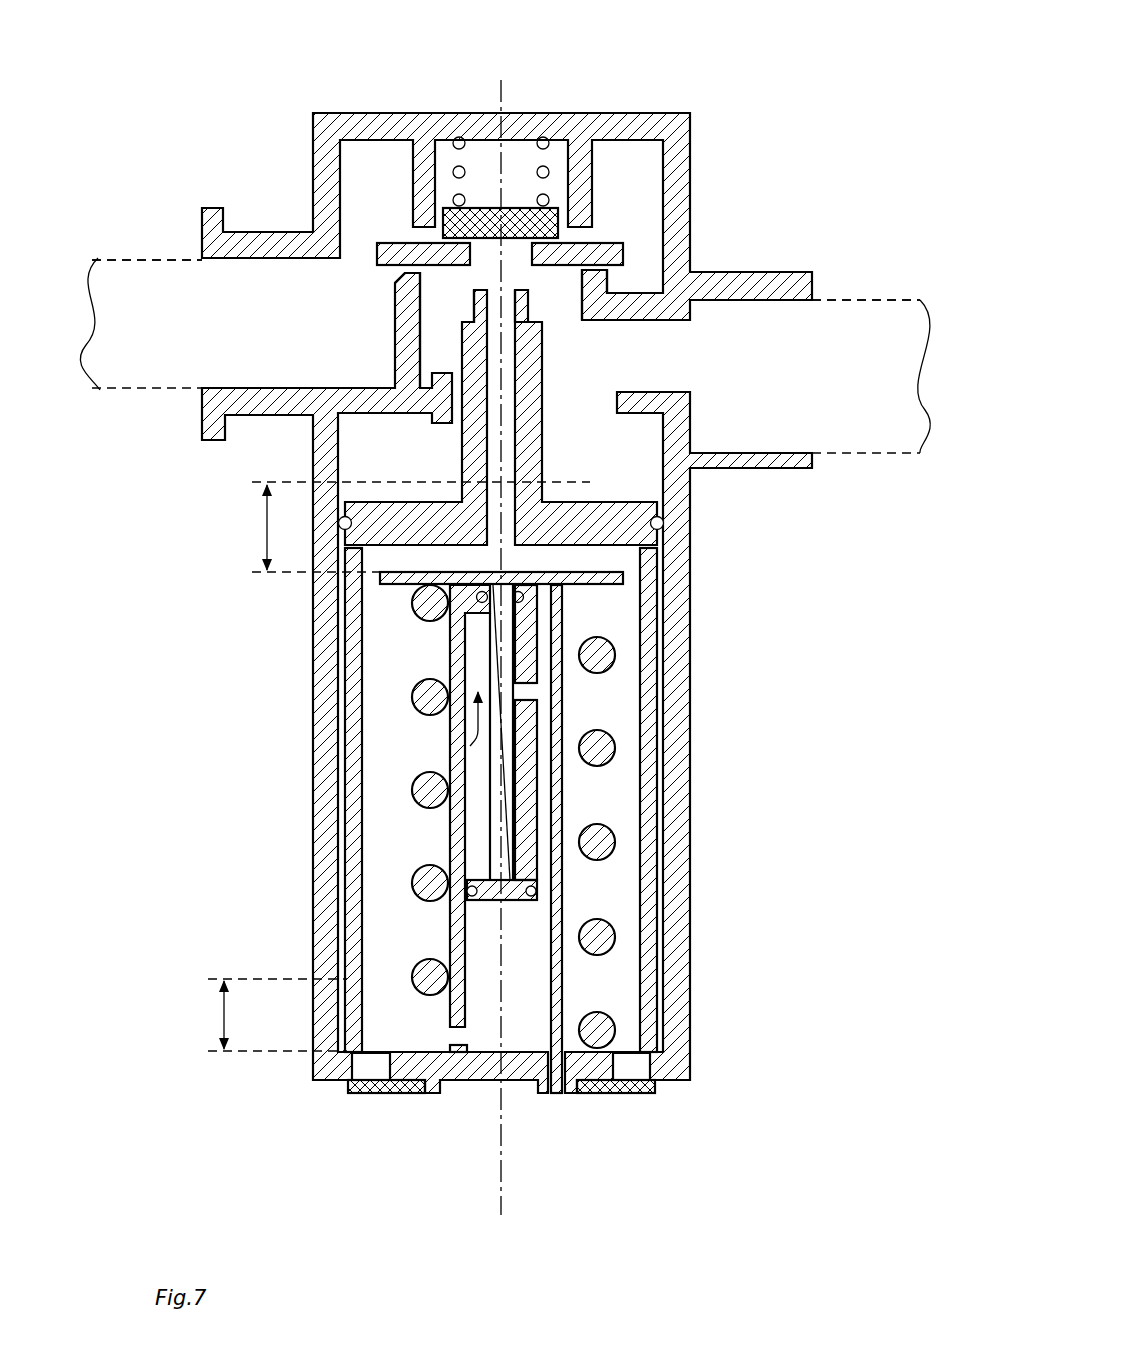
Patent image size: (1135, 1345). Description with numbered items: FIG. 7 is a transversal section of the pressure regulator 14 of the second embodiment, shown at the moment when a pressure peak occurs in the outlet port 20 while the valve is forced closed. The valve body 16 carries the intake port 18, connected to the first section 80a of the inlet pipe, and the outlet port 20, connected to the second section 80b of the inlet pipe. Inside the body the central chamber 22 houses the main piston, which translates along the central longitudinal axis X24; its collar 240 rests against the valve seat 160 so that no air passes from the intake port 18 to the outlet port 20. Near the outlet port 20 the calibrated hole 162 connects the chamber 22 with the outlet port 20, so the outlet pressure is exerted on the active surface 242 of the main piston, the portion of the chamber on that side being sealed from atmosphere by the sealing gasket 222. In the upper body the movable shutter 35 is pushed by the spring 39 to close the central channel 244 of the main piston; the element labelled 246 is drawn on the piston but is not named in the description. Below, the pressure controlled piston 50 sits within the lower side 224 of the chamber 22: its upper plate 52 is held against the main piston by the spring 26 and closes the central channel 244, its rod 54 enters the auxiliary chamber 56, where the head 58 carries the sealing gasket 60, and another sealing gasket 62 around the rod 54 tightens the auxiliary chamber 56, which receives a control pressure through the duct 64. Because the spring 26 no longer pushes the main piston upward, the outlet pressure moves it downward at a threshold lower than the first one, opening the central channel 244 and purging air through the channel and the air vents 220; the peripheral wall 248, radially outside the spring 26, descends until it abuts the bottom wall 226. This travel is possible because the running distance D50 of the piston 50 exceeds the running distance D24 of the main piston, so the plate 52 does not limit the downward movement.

The pressure regulator 14 is at (760, 106).
The valve body 16 is at (310, 192).
The intake port 18 is at (222, 290).
The outlet port 20 is at (797, 430).
The central chamber 22 is at (613, 440).
The spring 26 is at (598, 752).
The movable shutter 35 is at (548, 220).
The spring 39 is at (557, 140).
The pressure controlled piston 50 is at (522, 737).
The upper plate 52 is at (478, 600).
The rod 54 is at (540, 692).
The auxiliary chamber 56 is at (458, 740).
The head 58 is at (517, 900).
The sealing gasket 60 is at (540, 900).
The sealing gasket 62 is at (545, 590).
The duct 64 is at (540, 893).
The first section of the inlet pipe 80a is at (128, 258).
The second section of the inlet pipe 80b is at (847, 300).
The valve seat 160 is at (404, 278).
The calibrated hole 162 is at (610, 397).
The air vents 220 is at (372, 1065).
The sealing gasket 222 is at (340, 523).
The lower side of the chamber 224 is at (612, 1003).
The bottom wall 226 is at (408, 1068).
The collar 240 is at (603, 251).
The active surface 242 is at (487, 456).
The central channel 244 is at (470, 441).
The stem neck 246 is at (462, 339).
The peripheral wall 248 is at (352, 925).
The running distance of the piston D24 is at (261, 1015).
The running distance of the pressure controlled piston D50 is at (405, 527).
The central longitudinal axis X24 is at (504, 631).